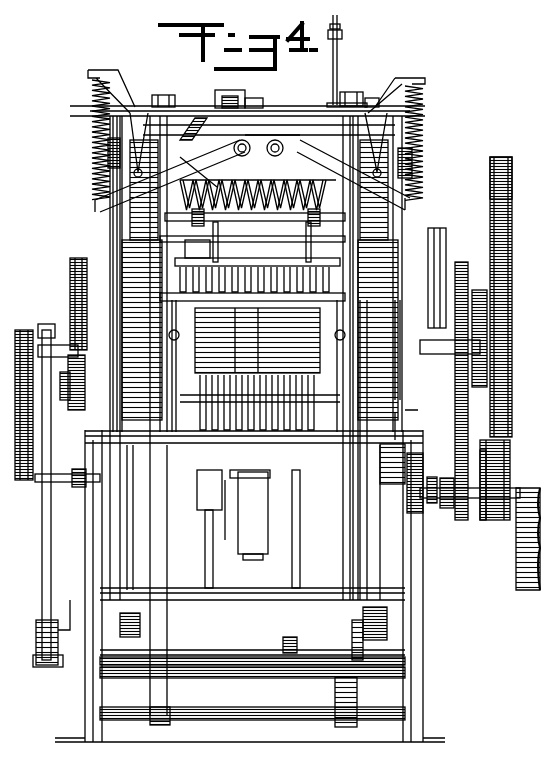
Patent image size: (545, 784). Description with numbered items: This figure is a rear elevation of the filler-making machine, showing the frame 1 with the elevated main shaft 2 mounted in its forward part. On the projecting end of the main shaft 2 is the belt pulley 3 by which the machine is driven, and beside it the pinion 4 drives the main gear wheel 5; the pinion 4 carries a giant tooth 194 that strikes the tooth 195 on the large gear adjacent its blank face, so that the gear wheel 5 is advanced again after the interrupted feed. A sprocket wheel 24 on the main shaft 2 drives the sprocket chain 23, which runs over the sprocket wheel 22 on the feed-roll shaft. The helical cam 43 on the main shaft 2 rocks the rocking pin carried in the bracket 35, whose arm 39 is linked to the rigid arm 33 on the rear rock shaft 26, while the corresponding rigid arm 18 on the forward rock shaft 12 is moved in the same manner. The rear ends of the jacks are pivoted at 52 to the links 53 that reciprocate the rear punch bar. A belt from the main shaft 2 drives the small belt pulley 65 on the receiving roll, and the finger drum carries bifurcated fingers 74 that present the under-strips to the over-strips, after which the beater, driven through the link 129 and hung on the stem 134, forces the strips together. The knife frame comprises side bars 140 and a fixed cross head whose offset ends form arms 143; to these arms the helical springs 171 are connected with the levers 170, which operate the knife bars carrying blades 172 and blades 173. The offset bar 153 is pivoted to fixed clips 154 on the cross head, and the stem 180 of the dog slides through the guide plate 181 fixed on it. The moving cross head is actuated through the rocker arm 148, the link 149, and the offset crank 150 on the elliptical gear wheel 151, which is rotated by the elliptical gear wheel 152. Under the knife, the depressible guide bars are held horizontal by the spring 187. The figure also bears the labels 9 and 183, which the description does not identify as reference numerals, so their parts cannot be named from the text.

The frame 1 is at (420, 577).
The main shaft 2 is at (60, 476).
The belt pulley 3 is at (525, 590).
The pinion 4 is at (502, 518).
The main gear wheel 5 is at (490, 176).
The bar 9 is at (190, 248).
The rock shaft 12 is at (308, 652).
The rigid arm 18 is at (300, 572).
The sprocket wheel 22 is at (456, 280).
The sprocket chain 23 is at (410, 434).
The sprocket wheel 24 is at (462, 510).
The rock shaft 26 is at (248, 657).
The rigid arm 33 is at (214, 577).
The bracket 35 is at (232, 485).
The arm 39 is at (230, 490).
The helical cam 43 is at (236, 530).
The pivot 52 is at (390, 625).
The links 53 is at (395, 412).
The belt pulley 65 is at (22, 332).
The fingers 74 is at (275, 285).
The link 129 is at (434, 262).
The stem 134 is at (218, 234).
The side bars 140 is at (373, 109).
The arms 143 is at (96, 71).
The rocker arm 148 is at (45, 610).
The link 149 is at (52, 546).
The offset crank 150 is at (62, 386).
The gear wheel 151 is at (70, 355).
The gear wheel 152 is at (70, 266).
The offset bar 153 is at (225, 92).
The fixed clips 154 is at (250, 97).
The levers 170 is at (230, 162).
The helical springs 171 is at (94, 128).
The blades 172 is at (284, 176).
The blades 173 is at (207, 168).
The stem 180 is at (339, 62).
The guide plate 181 is at (340, 100).
The spring seat 183 is at (130, 140).
The spring 187 is at (370, 358).
The giant tooth 194 is at (480, 452).
The tooth 195 is at (490, 248).